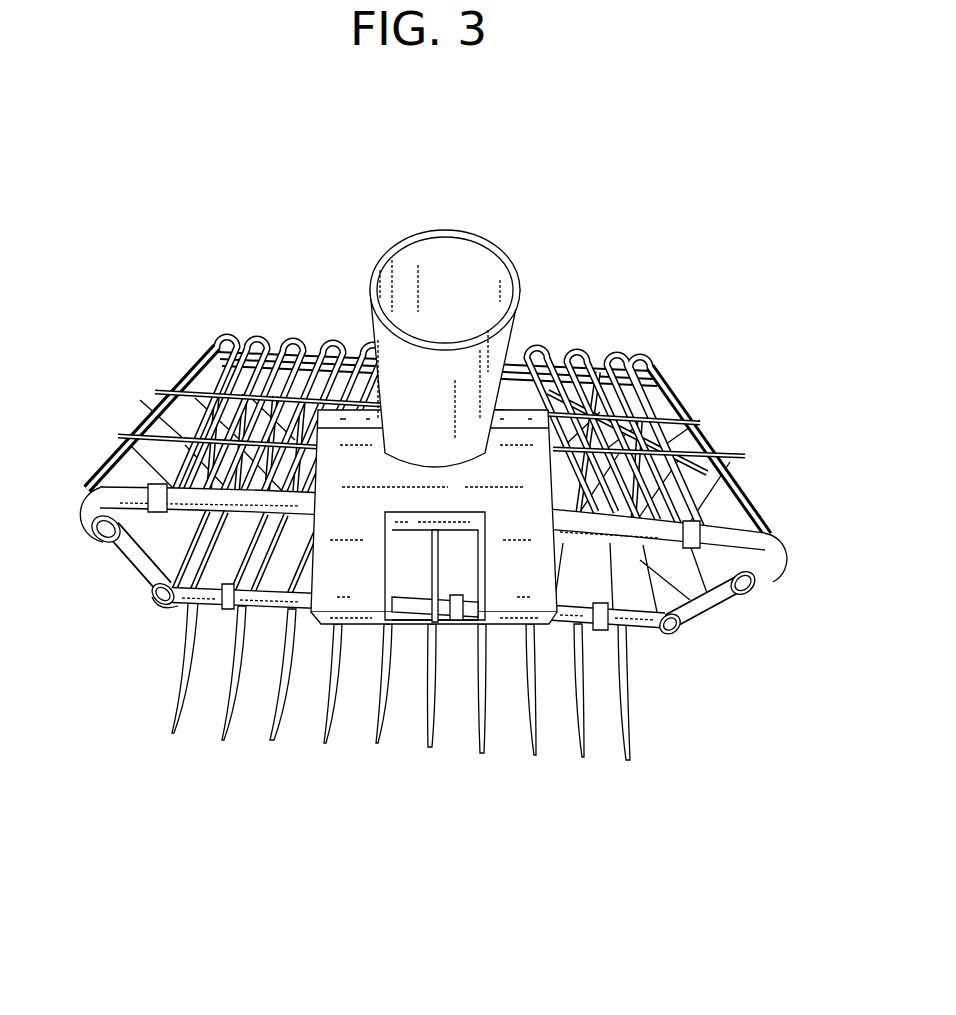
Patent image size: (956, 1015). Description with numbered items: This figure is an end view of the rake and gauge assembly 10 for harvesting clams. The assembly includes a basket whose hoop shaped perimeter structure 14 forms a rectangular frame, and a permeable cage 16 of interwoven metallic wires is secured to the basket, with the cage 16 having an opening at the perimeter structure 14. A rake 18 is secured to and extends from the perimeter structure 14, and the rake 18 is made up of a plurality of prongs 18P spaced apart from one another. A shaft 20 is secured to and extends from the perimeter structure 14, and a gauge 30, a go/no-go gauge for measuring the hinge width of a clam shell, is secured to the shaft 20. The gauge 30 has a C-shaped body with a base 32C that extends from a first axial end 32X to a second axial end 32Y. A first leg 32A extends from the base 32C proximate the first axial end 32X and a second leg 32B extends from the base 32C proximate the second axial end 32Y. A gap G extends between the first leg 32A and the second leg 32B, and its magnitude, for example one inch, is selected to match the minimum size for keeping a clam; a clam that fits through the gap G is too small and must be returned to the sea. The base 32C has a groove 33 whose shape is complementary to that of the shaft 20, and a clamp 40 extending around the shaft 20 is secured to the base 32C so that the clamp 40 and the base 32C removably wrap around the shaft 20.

The rake and gauge assembly 10 is at (437, 526).
The hoop shaped perimeter structure 14 is at (773, 570).
The permeable cage 16 is at (716, 455).
The rake 18 is at (402, 712).
The prongs 18P is at (270, 725).
The shaft 20 is at (490, 355).
The gauge 30 is at (598, 440).
The first leg 32A is at (320, 575).
The second leg 32B is at (540, 602).
The base 32C is at (346, 475).
The first axial end 32X is at (313, 472).
The second axial end 32Y is at (690, 503).
The groove 33 is at (575, 445).
The clamp 40 is at (328, 340).
The gap G is at (394, 553).